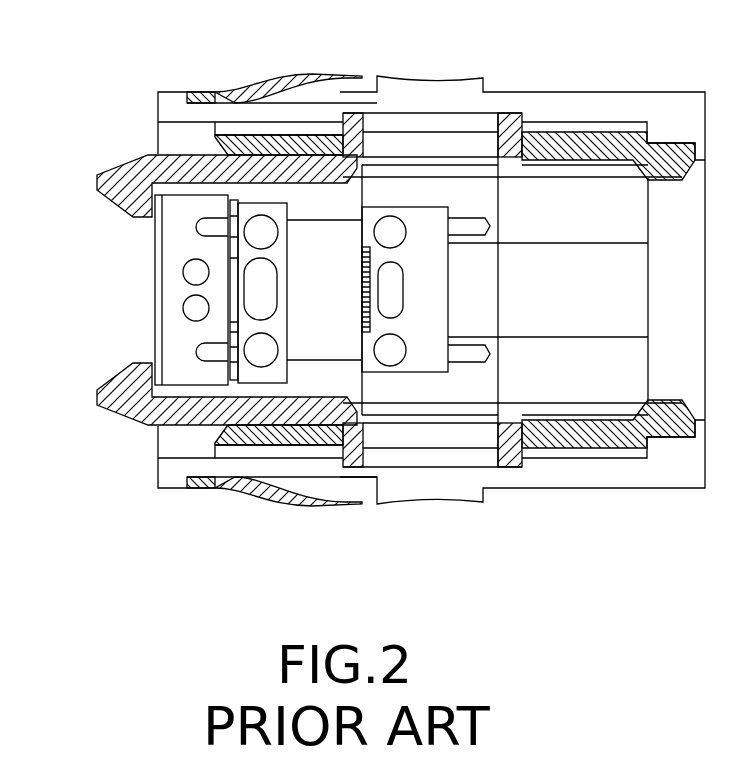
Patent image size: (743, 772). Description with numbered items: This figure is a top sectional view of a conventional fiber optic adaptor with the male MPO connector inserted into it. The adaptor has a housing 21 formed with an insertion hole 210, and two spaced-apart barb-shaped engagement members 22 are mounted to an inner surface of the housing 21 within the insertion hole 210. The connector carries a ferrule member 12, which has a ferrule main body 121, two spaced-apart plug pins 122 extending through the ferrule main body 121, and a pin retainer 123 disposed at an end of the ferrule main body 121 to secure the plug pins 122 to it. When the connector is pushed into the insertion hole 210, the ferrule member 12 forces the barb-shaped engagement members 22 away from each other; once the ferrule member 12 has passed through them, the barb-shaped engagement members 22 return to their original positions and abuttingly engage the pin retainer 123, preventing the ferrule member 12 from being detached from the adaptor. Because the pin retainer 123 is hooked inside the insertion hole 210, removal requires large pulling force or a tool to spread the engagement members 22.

The ferrule member 12 is at (423, 197).
The ferrule main body 121 is at (328, 213).
The plug pins 122 is at (469, 232).
The pin retainer 123 is at (177, 292).
The housing 21 is at (293, 440).
The insertion hole 210 is at (431, 378).
The barb-shaped engagement members 22 is at (127, 168).